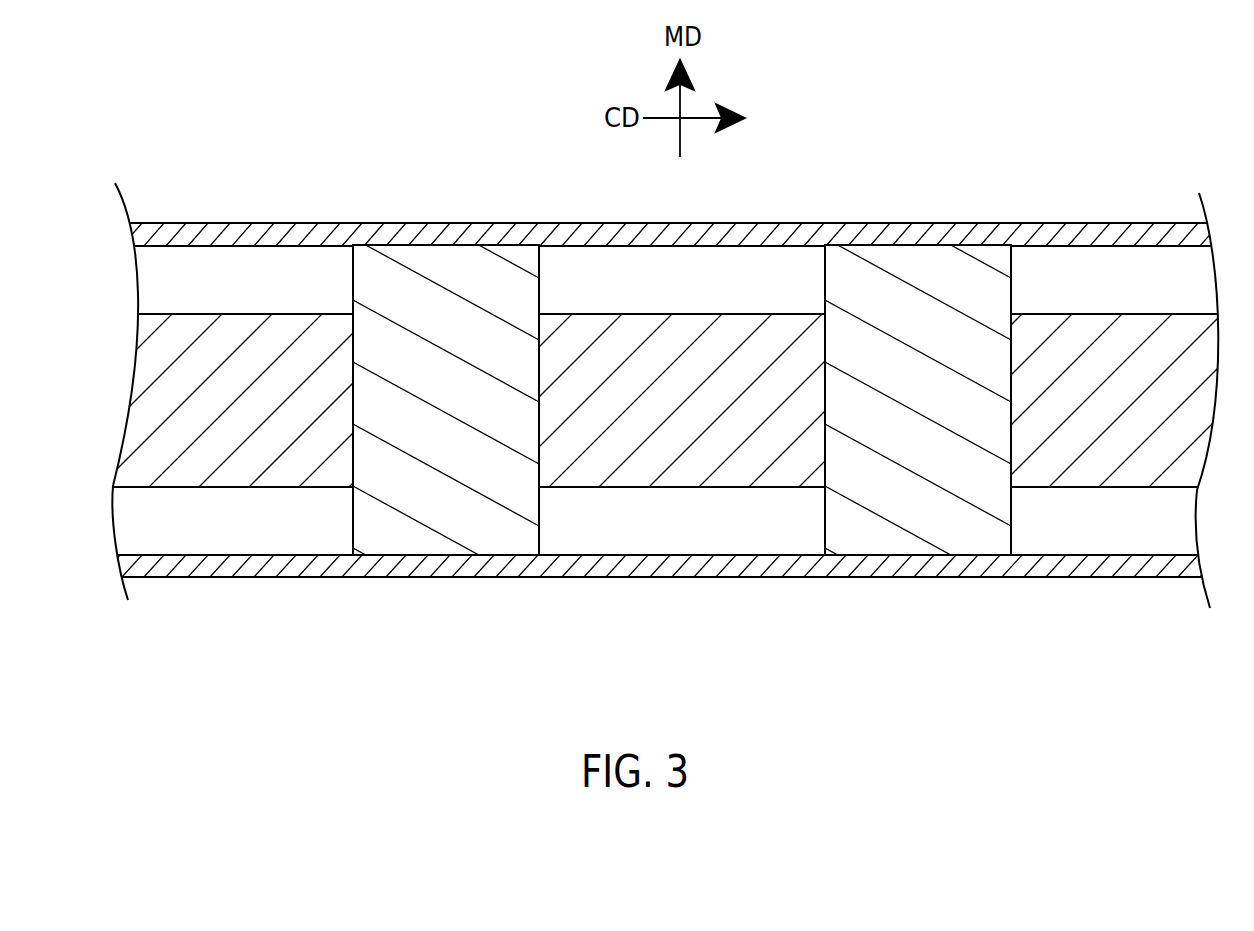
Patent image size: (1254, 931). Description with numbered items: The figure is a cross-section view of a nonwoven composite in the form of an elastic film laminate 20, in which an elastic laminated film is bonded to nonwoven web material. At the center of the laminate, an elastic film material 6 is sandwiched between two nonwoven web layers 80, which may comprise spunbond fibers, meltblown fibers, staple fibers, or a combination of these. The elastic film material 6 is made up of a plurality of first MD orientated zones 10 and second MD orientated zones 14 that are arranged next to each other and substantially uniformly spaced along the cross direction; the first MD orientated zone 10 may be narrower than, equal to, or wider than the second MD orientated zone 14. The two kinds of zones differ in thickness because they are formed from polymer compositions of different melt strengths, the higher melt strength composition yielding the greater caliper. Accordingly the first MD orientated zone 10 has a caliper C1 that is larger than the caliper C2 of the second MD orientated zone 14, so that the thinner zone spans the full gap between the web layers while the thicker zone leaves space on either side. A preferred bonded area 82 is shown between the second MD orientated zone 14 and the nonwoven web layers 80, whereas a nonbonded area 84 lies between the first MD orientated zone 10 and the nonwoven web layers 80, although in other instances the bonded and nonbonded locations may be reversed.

The elastic film laminate 20 is at (244, 137).
The first MD orientated zone 10 is at (188, 328).
The second MD orientated zone 14 is at (431, 263).
The elastic film material 6 is at (664, 489).
The nonwoven web layers 80 is at (1073, 236).
The preferred bonded area 82 is at (921, 562).
The nonbonded area 84 is at (1128, 279).
The caliper of first MD orientated zone C1 is at (261, 314).
The caliper of second MD orientated zone C2 is at (403, 630).